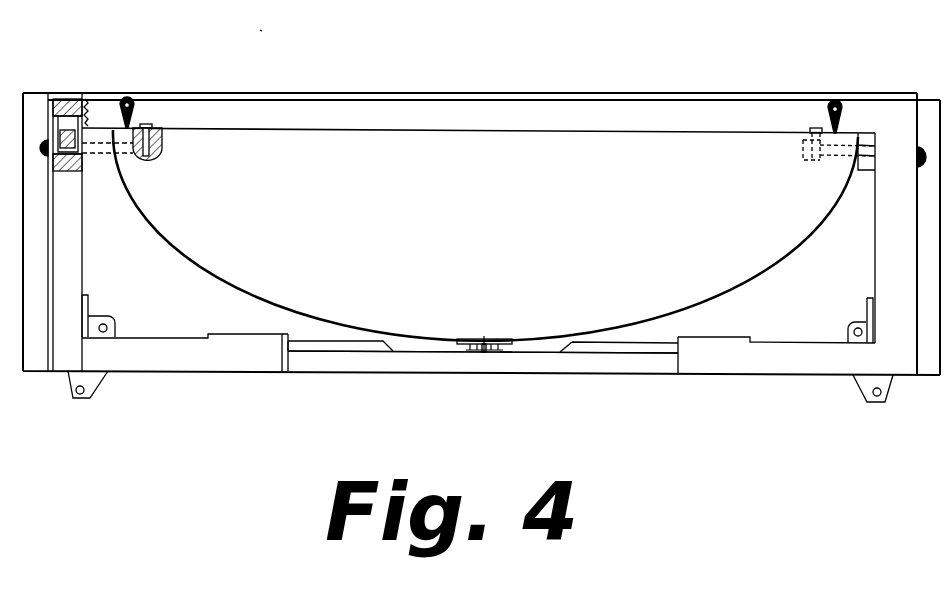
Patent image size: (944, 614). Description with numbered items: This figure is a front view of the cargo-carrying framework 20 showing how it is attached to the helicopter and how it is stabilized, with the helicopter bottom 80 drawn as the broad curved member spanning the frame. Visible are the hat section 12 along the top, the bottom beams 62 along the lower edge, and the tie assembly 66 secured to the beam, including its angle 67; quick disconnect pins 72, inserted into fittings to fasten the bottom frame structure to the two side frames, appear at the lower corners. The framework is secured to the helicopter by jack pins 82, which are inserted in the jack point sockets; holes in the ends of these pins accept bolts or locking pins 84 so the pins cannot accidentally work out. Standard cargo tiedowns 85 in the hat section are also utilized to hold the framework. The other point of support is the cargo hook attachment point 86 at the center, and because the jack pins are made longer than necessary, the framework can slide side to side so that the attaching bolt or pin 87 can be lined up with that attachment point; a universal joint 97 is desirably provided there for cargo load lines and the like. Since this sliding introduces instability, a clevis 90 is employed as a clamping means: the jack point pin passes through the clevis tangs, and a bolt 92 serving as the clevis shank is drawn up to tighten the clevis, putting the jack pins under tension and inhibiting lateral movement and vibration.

The hat section 12 is at (583, 93).
The cargo-carrying framework 20 is at (265, 19).
The bottom beams 62 is at (180, 374).
The tie assembly 66 is at (338, 375).
The angle 67 is at (342, 340).
The quick disconnect pins 72 is at (95, 384).
The helicopter bottom 80 is at (776, 260).
The jack pins 82 is at (142, 165).
The locking pins 84 is at (150, 126).
The cargo tiedowns 85 is at (133, 100).
The cargo hook attachment point 86 is at (530, 300).
The attaching bolt 87 is at (486, 355).
The clevis 90 is at (85, 98).
The bolt 92 is at (68, 128).
The universal joint 97 is at (500, 352).